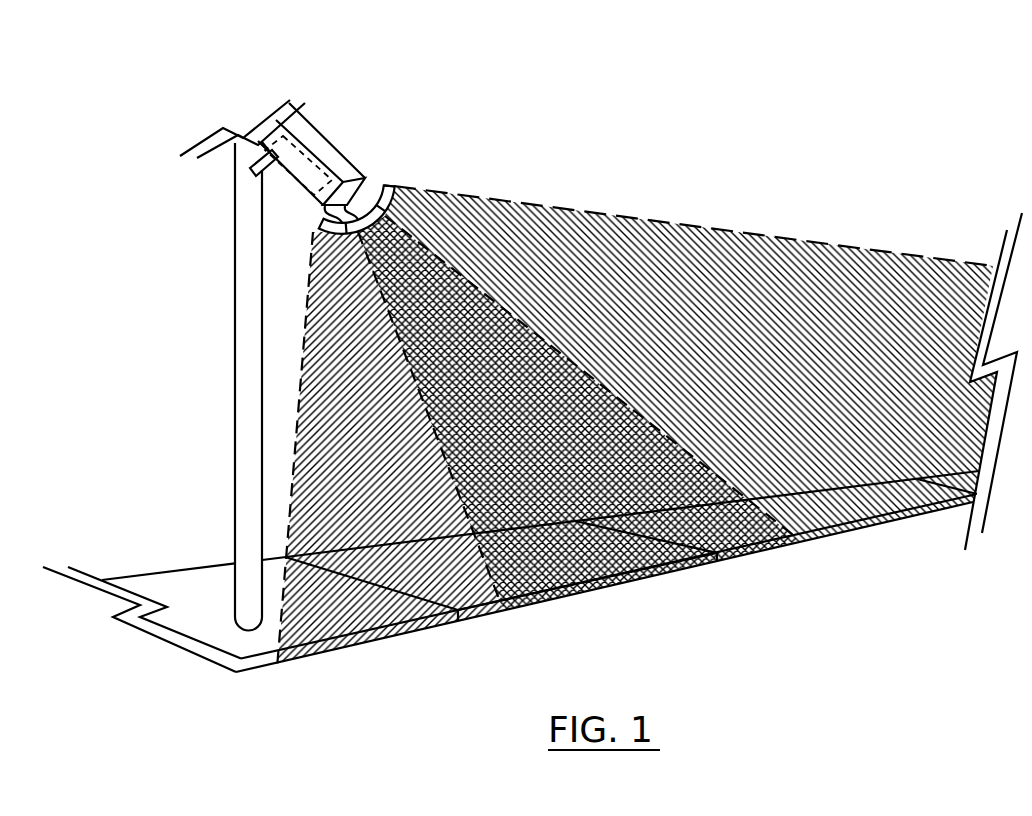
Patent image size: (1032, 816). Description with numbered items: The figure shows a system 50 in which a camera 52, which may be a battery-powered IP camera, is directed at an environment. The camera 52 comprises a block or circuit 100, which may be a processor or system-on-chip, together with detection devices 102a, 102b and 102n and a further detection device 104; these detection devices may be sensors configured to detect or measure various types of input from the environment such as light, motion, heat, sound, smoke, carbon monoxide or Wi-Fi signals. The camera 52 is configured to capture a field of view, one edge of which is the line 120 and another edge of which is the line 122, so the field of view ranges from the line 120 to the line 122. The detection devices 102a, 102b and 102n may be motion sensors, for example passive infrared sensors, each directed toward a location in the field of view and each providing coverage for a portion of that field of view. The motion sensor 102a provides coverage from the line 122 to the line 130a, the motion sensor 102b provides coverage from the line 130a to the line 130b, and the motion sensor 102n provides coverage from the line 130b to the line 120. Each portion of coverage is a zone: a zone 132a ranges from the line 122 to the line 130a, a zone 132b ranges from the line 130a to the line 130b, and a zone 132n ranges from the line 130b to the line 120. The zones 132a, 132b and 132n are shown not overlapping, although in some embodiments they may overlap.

The system 50 is at (478, 22).
The camera 52 is at (358, 195).
The block (or circuit) 100 is at (338, 160).
The motion sensor 102a is at (313, 229).
The motion sensor 102b is at (380, 226).
The motion sensor 102n is at (392, 187).
The detection device 104 is at (286, 127).
The line 120 is at (614, 213).
The line 122 is at (300, 356).
The line 130a is at (503, 611).
The line 130b is at (808, 540).
The zone 132a is at (398, 478).
The zone 132b is at (549, 447).
The zone 132n is at (726, 332).